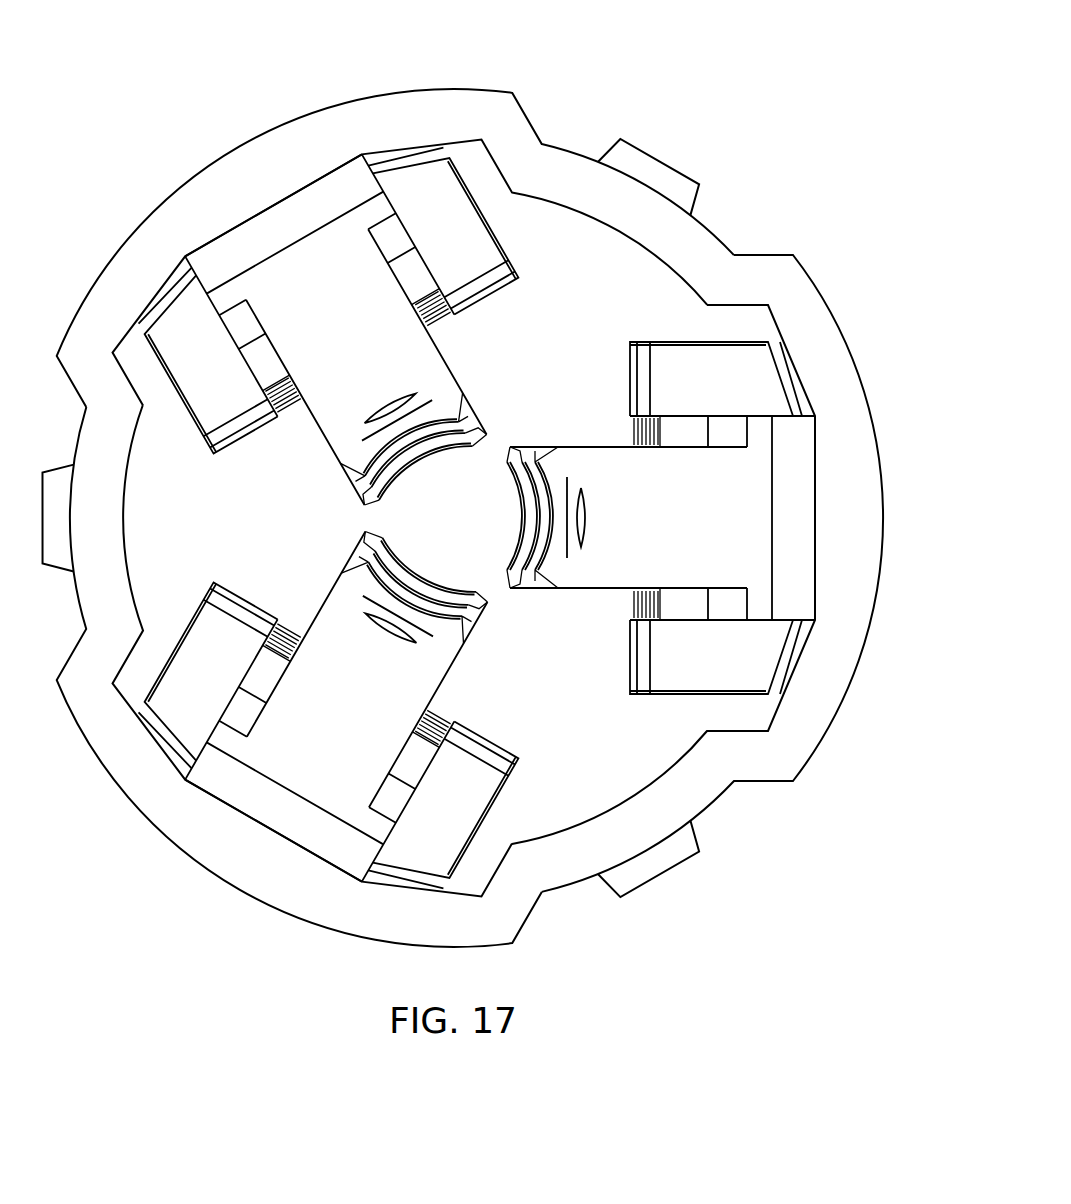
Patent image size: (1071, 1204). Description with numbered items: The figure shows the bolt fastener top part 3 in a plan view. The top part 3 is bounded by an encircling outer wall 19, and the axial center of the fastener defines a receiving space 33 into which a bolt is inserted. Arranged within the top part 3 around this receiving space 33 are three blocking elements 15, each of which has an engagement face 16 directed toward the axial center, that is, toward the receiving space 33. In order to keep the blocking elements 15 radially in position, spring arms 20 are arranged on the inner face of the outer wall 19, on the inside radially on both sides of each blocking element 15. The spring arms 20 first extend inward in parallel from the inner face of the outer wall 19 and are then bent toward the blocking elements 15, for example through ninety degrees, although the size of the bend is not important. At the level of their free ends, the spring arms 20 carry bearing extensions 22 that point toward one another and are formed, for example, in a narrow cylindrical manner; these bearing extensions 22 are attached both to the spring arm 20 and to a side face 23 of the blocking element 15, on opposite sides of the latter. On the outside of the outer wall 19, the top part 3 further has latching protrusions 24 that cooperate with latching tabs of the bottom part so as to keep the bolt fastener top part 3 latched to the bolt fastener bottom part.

The fastener top part 3 is at (441, 510).
The blocking elements 15 is at (333, 355).
The engagement face 16 is at (437, 452).
The outer wall 19 is at (388, 92).
The spring arms 20 is at (420, 225).
The bearing extensions 22 is at (633, 416).
The side face 23 is at (448, 358).
The latching protrusions 24 is at (670, 167).
The receiving space 33 is at (435, 533).